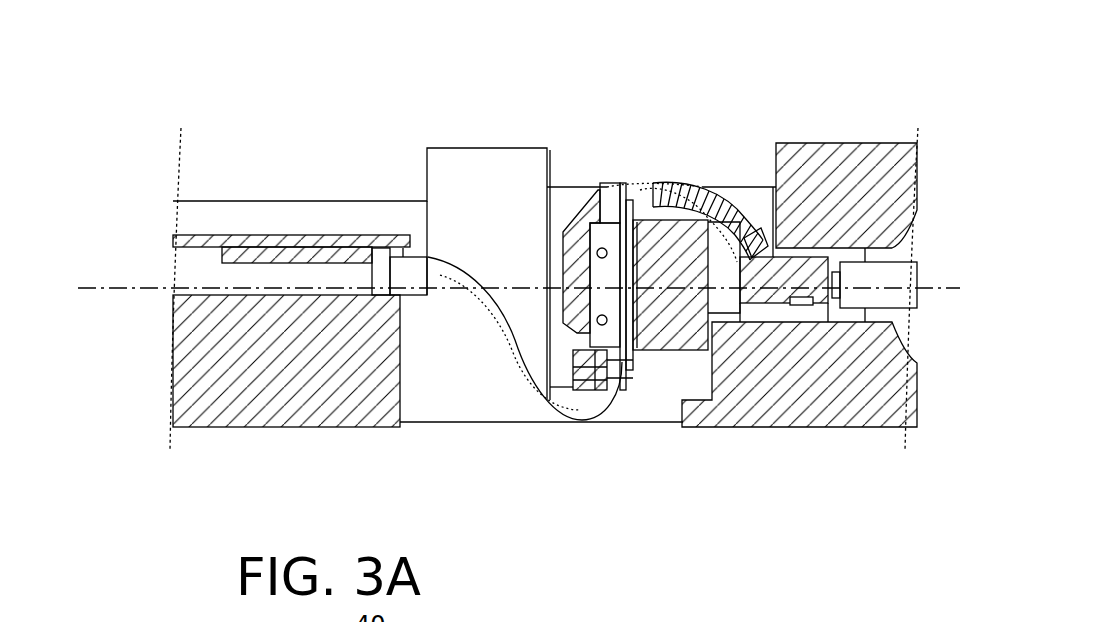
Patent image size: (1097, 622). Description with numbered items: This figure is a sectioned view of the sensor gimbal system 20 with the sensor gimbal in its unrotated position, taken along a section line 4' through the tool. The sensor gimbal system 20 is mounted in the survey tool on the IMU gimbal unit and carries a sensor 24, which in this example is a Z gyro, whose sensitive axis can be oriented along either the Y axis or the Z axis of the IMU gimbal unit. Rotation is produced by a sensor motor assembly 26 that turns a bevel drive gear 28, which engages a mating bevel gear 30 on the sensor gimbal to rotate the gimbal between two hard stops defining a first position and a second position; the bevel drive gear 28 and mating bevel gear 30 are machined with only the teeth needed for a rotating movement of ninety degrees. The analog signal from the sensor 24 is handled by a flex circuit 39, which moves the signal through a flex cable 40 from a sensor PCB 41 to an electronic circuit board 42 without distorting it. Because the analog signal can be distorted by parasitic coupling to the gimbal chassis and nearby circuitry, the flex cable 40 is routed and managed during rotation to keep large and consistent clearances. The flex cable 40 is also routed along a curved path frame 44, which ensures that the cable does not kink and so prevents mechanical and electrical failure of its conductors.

The section line / axis 4' is at (502, 272).
The sensor gimbal system 20 is at (540, 52).
The sensor 24 is at (665, 258).
The sensor motor assembly 26 is at (878, 300).
The bevel drive gear 28 is at (763, 233).
The mating bevel gear 30 is at (688, 195).
The flex circuit 39 is at (468, 192).
The flex cable 40 is at (512, 340).
The sensor PCB 41 is at (630, 304).
The electronic circuit board 42 is at (298, 258).
The curved path frame 44 is at (579, 398).